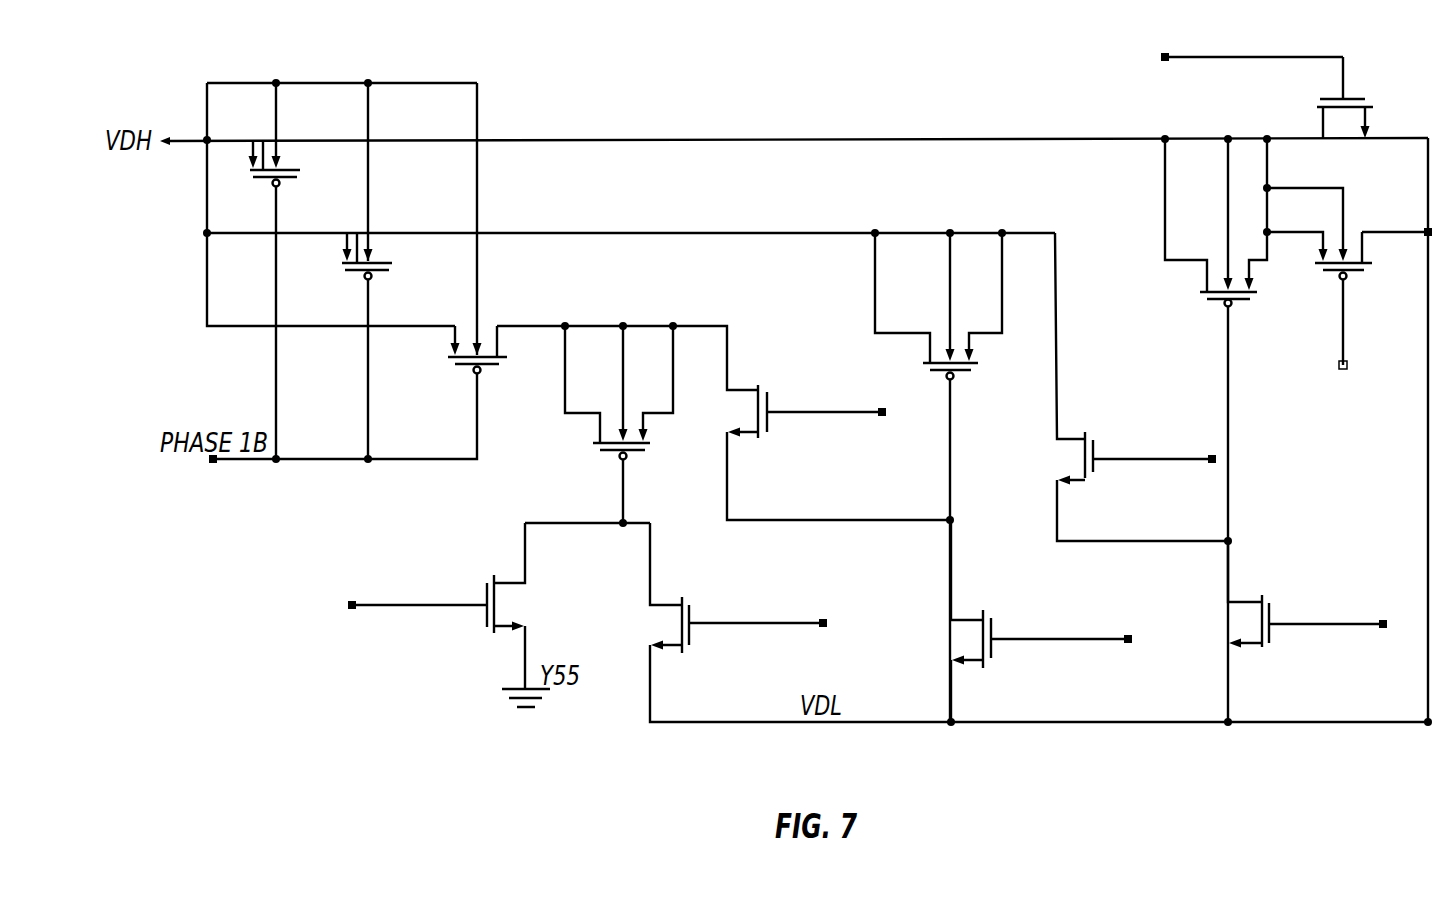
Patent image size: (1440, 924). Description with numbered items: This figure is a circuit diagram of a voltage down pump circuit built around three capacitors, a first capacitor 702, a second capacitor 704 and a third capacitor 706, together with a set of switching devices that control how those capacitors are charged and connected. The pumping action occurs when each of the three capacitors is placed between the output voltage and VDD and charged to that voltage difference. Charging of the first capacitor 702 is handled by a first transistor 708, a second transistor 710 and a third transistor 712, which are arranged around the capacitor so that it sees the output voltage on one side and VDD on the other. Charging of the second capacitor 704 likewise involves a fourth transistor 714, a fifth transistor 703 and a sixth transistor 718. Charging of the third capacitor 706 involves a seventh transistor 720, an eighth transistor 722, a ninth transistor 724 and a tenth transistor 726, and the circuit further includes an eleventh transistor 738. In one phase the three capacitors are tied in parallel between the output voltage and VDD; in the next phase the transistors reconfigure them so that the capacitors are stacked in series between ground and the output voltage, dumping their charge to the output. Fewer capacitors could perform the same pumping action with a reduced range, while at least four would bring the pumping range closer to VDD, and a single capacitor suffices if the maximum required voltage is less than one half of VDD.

The transistor M1 726 is at (300, 172).
The transistor M2 718 is at (392, 265).
The transistor M3 712 is at (490, 365).
The capacitor M12 702 is at (647, 445).
The transistor M7 714 is at (760, 438).
The capacitor M13 704 is at (975, 365).
The transistor M9 720 is at (1087, 480).
The transistor M5 708 is at (497, 598).
The transistor M6 710 is at (684, 651).
The transistor M8 703 is at (985, 666).
The transistor M11 724 is at (1264, 648).
The transistor M10 722 is at (1357, 97).
The capacitor M14 706 is at (1200, 295).
The transistor M15 738 is at (1325, 270).